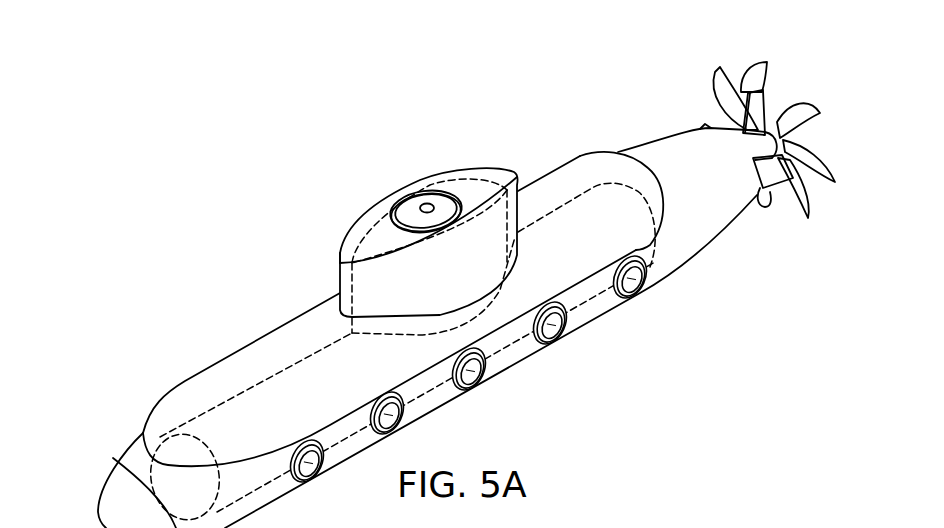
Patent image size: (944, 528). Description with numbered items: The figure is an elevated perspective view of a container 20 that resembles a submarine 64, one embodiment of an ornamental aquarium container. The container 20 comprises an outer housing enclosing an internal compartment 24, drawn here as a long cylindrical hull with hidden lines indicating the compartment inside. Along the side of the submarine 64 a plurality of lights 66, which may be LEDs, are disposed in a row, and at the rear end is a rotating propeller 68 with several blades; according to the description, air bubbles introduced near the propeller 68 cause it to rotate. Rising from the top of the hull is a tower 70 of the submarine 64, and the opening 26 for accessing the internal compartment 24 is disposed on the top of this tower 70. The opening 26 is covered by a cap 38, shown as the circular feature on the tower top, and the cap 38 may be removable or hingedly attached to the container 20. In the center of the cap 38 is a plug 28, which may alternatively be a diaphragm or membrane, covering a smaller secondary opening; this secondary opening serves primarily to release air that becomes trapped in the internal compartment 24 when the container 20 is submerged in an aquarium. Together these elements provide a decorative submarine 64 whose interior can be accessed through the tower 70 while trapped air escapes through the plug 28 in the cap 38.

The container 20 is at (231, 146).
The internal compartment 24 is at (287, 431).
The opening 26 is at (410, 195).
The cap 38 is at (407, 206).
The plug 28 is at (427, 206).
The submarine 64 is at (306, 135).
The lights 66 is at (309, 477).
The propeller 68 is at (763, 58).
The tower 70 is at (334, 280).